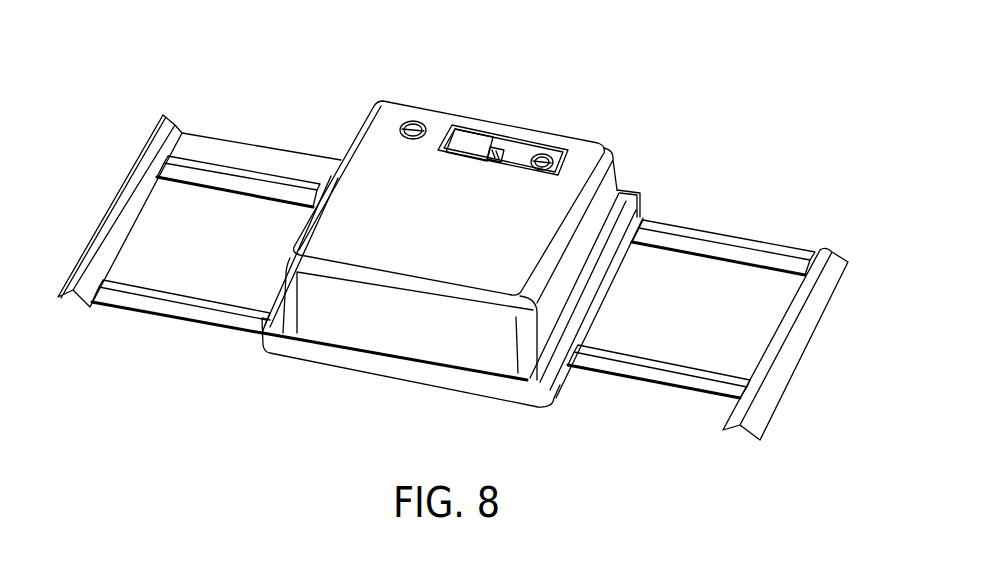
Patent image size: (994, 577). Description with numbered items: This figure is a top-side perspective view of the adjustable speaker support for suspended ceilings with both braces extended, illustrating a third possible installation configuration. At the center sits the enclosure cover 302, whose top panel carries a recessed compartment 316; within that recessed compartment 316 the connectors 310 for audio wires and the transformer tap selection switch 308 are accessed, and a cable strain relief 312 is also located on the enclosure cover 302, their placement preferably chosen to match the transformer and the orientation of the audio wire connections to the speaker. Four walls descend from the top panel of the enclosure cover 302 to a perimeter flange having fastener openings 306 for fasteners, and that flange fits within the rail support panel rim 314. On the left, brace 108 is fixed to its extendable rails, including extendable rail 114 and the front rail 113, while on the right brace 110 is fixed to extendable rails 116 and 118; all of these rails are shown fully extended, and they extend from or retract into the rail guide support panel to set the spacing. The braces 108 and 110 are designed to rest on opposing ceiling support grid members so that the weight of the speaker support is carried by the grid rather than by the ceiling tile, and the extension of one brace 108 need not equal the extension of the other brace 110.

The brace 108 is at (133, 160).
The brace 110 is at (760, 418).
The front rail of first tray 113 is at (143, 293).
The extendable rail 114 is at (207, 180).
The extendable rail 116 is at (632, 365).
The extendable rail 118 is at (703, 232).
The enclosure cover 302 is at (370, 152).
The fastener opening 306 is at (630, 210).
The transformer tap selection switch 308 is at (550, 160).
The connectors 310 is at (500, 153).
The cable strain relief 312 is at (423, 130).
The rail support panel rim 314 is at (641, 200).
The recessed compartment 316 is at (466, 147).